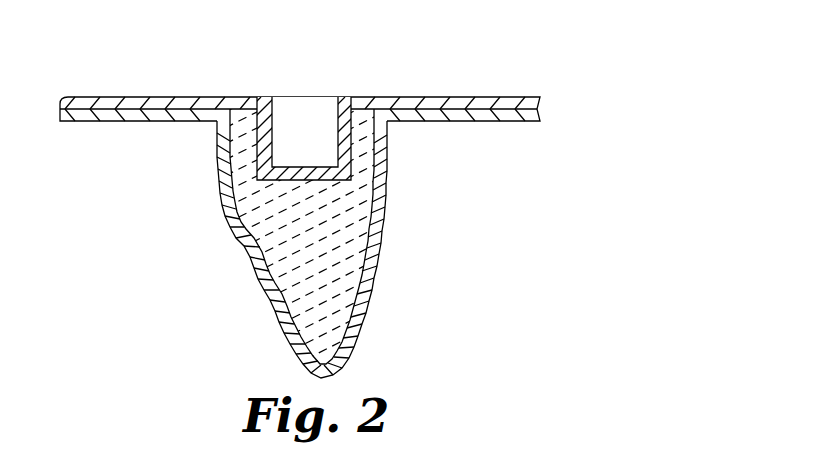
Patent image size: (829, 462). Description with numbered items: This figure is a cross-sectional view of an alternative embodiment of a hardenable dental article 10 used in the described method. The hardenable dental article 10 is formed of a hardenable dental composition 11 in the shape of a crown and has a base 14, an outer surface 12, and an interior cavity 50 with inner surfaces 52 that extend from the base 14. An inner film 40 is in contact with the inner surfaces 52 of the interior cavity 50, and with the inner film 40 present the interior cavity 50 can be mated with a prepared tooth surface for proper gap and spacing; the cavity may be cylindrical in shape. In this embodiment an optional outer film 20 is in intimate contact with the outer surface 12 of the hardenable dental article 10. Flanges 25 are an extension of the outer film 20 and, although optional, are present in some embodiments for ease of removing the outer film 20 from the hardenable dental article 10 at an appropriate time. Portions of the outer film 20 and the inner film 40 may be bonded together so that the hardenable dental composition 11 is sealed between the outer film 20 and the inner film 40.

The hardenable dental article 10 is at (117, 57).
The hardenable dental composition 11 is at (285, 300).
The outer surface 12 is at (364, 246).
The base 14 is at (245, 112).
The outer film 20 is at (252, 252).
The flanges 25 is at (102, 116).
The inner film 40 is at (447, 101).
The interior cavity 50 is at (320, 107).
The inner surfaces 52 is at (277, 108).